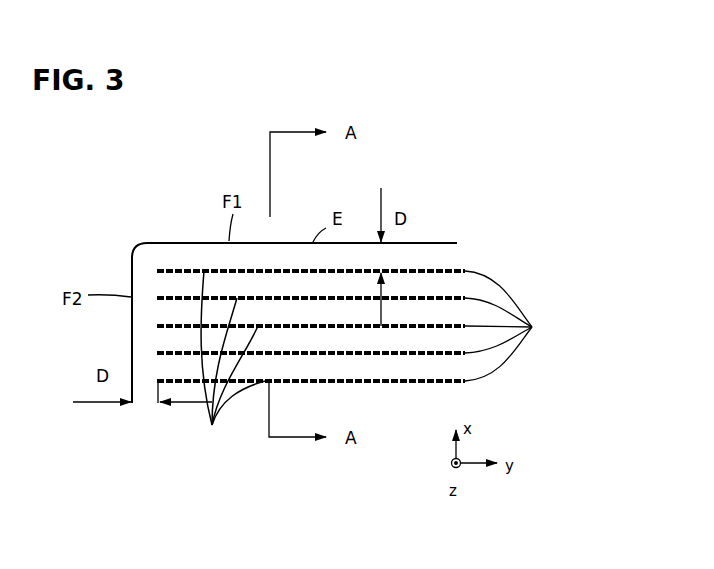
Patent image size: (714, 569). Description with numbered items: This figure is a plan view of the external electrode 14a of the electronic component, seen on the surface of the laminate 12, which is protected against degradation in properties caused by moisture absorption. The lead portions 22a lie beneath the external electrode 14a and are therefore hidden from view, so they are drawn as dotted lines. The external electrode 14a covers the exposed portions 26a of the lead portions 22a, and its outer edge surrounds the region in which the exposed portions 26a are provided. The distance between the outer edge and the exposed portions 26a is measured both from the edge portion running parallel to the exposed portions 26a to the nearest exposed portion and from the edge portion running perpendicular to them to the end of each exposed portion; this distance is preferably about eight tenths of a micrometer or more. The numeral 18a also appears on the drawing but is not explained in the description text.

The laminate 12 is at (173, 218).
The external electrode 14a is at (455, 244).
The lead portions 22a is at (519, 326).
The exposed portions 26a is at (225, 385).
The positive electrode current collector exposed portions 18a is at (225, 385).